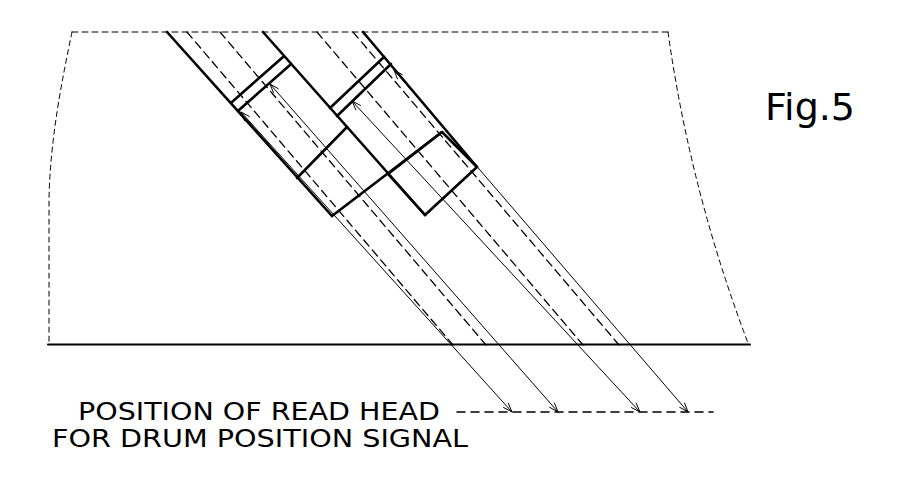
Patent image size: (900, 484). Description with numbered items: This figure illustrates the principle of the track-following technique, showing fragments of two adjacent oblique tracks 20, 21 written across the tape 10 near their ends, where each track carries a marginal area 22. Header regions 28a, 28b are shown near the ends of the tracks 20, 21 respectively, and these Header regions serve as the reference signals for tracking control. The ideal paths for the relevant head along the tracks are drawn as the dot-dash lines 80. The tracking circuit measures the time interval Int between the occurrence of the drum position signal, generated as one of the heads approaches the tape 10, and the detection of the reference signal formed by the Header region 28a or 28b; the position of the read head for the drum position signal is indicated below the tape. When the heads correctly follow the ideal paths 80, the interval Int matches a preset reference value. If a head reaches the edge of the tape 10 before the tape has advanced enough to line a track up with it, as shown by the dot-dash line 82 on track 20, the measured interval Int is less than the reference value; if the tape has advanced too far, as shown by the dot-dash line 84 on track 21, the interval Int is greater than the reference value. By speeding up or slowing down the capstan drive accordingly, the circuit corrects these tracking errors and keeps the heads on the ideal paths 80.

The tape 10 is at (172, 276).
The track 20 is at (198, 68).
The track 21 is at (430, 110).
The marginal area 22 is at (458, 147).
The Header region 28a is at (236, 110).
The Header region 28b is at (391, 66).
The ideal path 80 is at (553, 306).
The early head path 82 is at (377, 252).
The late head path 84 is at (527, 232).
The time interval Int is at (507, 262).